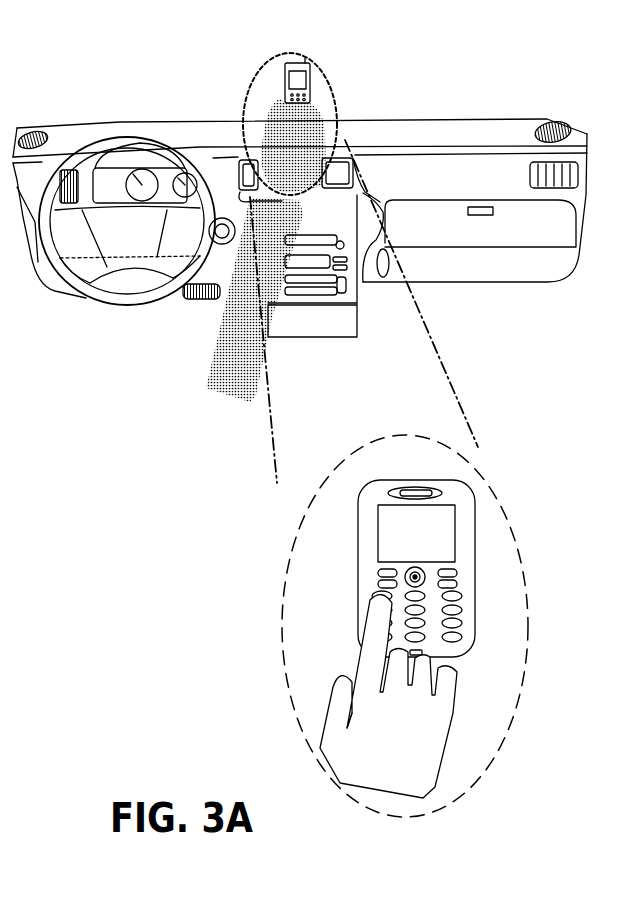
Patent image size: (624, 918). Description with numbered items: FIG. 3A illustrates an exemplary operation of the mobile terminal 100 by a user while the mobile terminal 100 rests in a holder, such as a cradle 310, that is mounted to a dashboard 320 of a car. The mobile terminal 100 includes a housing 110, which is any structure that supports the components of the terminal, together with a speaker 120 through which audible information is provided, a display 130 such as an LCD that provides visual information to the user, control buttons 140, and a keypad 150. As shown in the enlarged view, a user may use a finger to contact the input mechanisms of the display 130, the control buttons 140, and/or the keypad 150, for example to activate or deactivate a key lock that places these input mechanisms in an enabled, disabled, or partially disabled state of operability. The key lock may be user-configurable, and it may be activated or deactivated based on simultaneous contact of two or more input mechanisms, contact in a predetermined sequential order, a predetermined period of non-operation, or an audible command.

The mobile terminal 100 is at (310, 82).
The housing 110 is at (360, 512).
The speaker 120 is at (417, 490).
The display 130 is at (448, 548).
The control buttons 140 is at (474, 567).
The keypad 150 is at (474, 597).
The cradle 310 is at (313, 108).
The dashboard 320 is at (207, 130).